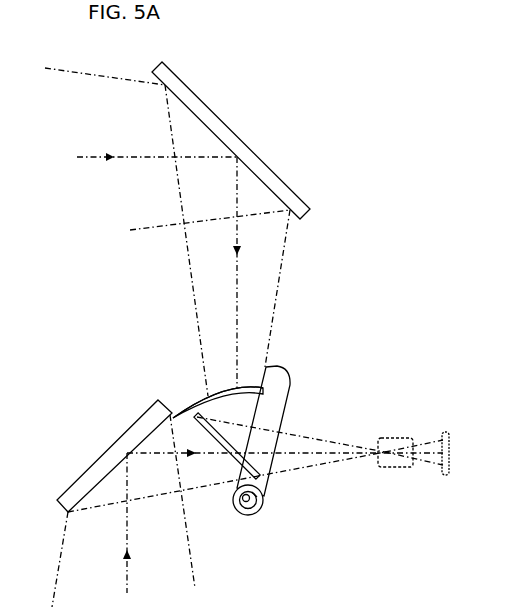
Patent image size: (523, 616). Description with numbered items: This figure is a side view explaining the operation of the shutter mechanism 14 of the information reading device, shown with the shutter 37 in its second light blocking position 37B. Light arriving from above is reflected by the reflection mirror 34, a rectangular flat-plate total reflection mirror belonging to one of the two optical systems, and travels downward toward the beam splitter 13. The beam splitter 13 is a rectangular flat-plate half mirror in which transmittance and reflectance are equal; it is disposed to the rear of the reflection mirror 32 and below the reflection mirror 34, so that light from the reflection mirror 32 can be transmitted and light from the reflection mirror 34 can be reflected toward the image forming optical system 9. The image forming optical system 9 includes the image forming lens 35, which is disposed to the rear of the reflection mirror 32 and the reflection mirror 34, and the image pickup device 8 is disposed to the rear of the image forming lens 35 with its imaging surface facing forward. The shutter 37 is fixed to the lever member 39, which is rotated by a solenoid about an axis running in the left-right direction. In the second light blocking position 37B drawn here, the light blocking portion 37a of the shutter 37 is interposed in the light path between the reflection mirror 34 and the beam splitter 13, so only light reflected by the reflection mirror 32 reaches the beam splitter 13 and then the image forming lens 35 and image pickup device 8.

The image pickup device 8 is at (446, 478).
The image forming optical system 9 is at (394, 412).
The beam splitter 13 is at (237, 463).
The shutter mechanism 14 is at (219, 565).
The reflection mirror 32 is at (97, 458).
The reflection mirror 34 is at (220, 111).
The image forming lens 35 is at (395, 469).
The shutter 37 is at (188, 382).
The second light blocking position 37B is at (190, 403).
The light blocking portion 37a is at (246, 387).
The lever member 39 is at (288, 410).